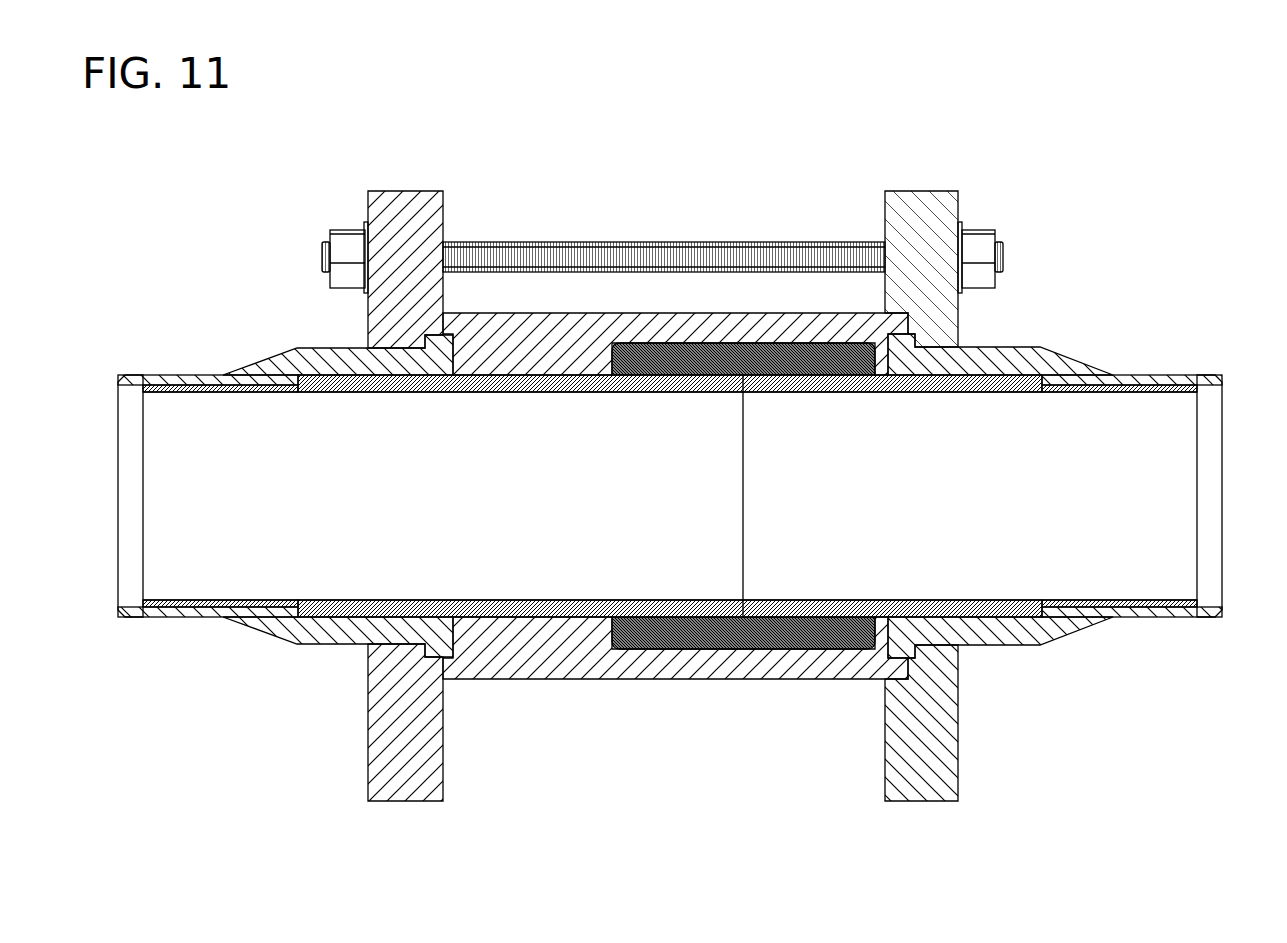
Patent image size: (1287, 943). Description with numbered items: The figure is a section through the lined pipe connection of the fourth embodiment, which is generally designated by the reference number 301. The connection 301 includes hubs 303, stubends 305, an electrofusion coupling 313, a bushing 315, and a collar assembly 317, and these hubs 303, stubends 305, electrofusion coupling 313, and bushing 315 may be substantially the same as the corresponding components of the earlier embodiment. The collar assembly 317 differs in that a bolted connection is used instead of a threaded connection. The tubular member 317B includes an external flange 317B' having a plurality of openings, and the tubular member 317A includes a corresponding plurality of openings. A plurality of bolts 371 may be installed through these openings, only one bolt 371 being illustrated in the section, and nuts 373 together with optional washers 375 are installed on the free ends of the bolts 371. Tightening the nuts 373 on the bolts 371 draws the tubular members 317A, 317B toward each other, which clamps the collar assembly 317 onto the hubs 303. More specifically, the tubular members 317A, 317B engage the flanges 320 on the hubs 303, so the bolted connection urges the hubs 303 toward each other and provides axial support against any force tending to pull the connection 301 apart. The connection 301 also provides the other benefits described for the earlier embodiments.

The connection 301 is at (694, 451).
The hubs 303 is at (262, 639).
The stubends 305 is at (327, 618).
The electrofusion coupling 313 is at (685, 654).
The bushing 315 is at (508, 661).
The collar assembly 317 is at (655, 454).
The tubular member 317A is at (920, 190).
The tubular member 317B is at (675, 275).
The external flange 317B' is at (398, 454).
The flanges 320 is at (423, 345).
The bolts 371 is at (690, 242).
The nuts 373 is at (334, 292).
The washers 375 is at (365, 224).